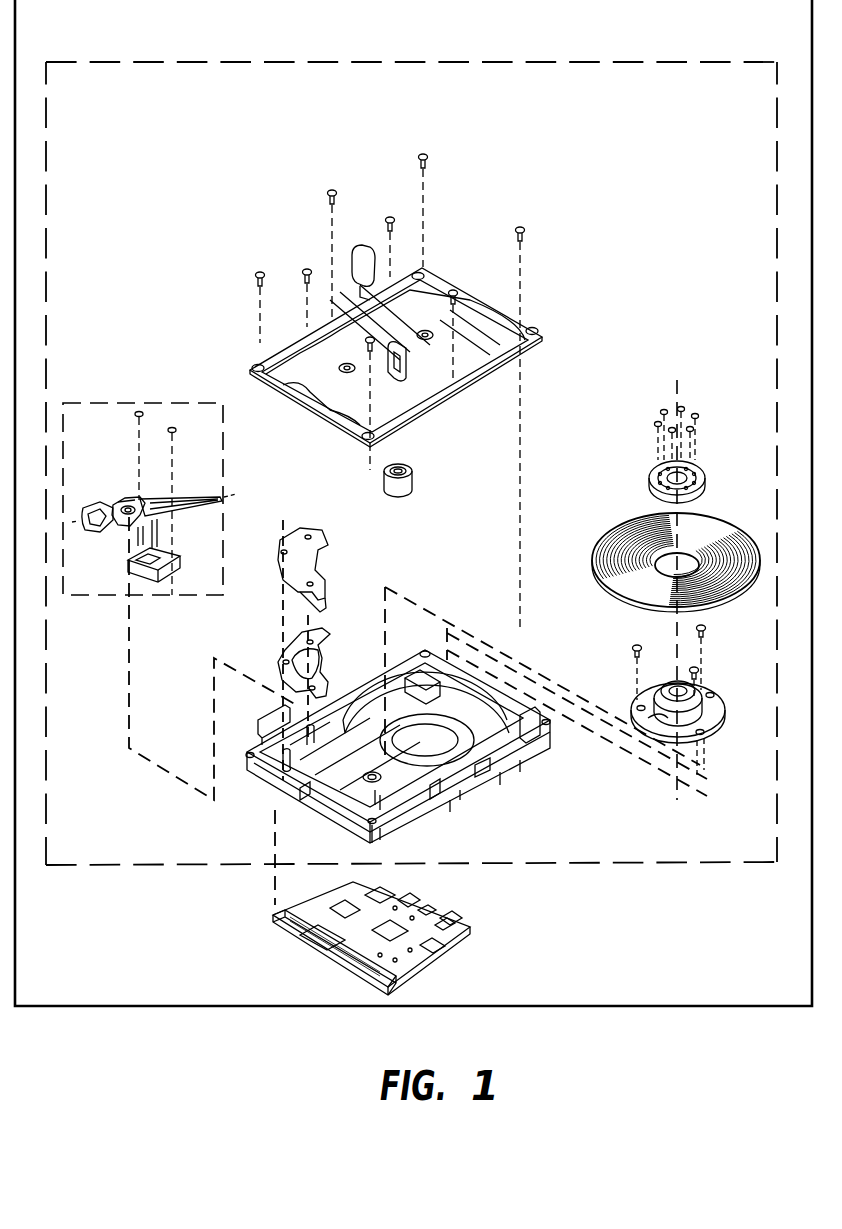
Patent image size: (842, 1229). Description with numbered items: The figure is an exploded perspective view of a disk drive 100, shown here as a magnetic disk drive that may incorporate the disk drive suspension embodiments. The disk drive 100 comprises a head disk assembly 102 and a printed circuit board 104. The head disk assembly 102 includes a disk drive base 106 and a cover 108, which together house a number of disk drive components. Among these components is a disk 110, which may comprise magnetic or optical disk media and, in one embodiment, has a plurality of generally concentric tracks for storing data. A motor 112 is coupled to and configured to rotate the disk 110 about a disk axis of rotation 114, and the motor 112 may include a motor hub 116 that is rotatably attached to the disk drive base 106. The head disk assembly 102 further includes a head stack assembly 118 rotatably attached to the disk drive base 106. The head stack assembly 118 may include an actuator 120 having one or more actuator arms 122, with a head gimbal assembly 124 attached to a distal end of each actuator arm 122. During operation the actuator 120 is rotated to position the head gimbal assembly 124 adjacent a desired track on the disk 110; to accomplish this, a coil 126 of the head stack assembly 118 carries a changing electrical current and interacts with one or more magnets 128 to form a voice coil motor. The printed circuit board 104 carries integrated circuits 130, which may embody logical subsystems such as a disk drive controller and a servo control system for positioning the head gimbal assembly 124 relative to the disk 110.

The disk drive 100 is at (206, 44).
The head disk assembly 102 is at (456, 62).
The printed circuit board 104 is at (458, 938).
The disk drive base 106 is at (440, 810).
The cover 108 is at (495, 365).
The disk 110 is at (625, 532).
The motor 112 is at (716, 708).
The disk axis of rotation 114 is at (676, 385).
The motor hub 116 is at (655, 730).
The head stack assembly 118 is at (170, 404).
The actuator 120 is at (167, 523).
The actuator arm 122 is at (155, 498).
The head gimbal assembly 124 is at (209, 495).
The coil 126 is at (91, 536).
The magnet 128 is at (305, 662).
The integrated circuit 130 is at (380, 895).